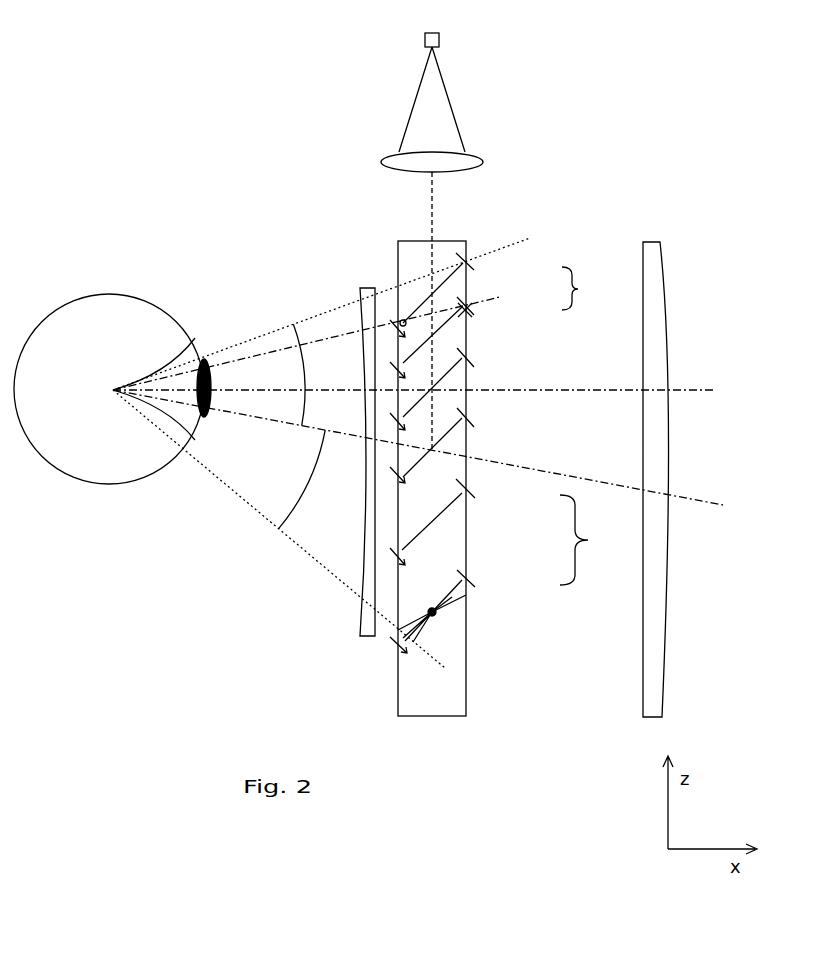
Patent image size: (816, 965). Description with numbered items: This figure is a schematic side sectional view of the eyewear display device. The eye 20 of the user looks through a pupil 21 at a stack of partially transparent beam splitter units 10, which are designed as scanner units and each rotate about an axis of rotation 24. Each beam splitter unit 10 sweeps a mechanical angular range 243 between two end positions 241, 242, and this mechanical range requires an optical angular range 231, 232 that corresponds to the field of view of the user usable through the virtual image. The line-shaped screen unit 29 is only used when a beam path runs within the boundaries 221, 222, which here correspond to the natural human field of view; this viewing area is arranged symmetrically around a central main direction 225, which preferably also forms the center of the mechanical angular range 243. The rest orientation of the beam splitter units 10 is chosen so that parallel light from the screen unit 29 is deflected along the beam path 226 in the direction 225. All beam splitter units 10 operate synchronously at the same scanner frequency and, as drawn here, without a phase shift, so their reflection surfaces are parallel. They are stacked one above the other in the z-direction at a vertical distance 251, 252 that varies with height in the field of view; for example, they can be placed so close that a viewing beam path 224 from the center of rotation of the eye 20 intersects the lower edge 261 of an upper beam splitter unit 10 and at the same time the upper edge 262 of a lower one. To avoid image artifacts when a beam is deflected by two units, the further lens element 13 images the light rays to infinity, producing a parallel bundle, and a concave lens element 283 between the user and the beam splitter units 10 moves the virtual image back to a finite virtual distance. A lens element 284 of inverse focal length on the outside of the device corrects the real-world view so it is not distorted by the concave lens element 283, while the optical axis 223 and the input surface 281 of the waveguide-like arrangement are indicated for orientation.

The eye 20 is at (116, 292).
The pupil 21 is at (212, 358).
The line-shaped screen unit 29 is at (440, 40).
The further lens element 13 is at (483, 155).
The beam path 226 is at (430, 190).
The waveguide input surface 281 is at (457, 240).
The beam splitter unit 10 is at (416, 462).
The lower edge 261 is at (401, 320).
The viewing beam path 224 is at (497, 297).
The upper edge 262 is at (473, 313).
The optical axis 223 is at (547, 388).
The central main direction 225 is at (483, 458).
The vertical distance 251 is at (591, 288).
The vertical distance 252 is at (594, 540).
The lens element 284 is at (665, 293).
The concave lens element 283 is at (360, 617).
The boundary 221 is at (325, 311).
The boundary 222 is at (217, 477).
The optical angular range 231 is at (302, 384).
The optical angular range 232 is at (304, 483).
The axis of rotation 24 is at (440, 615).
The end position 241 is at (468, 597).
The end position 242 is at (450, 592).
The mechanical angular range 243 is at (467, 583).